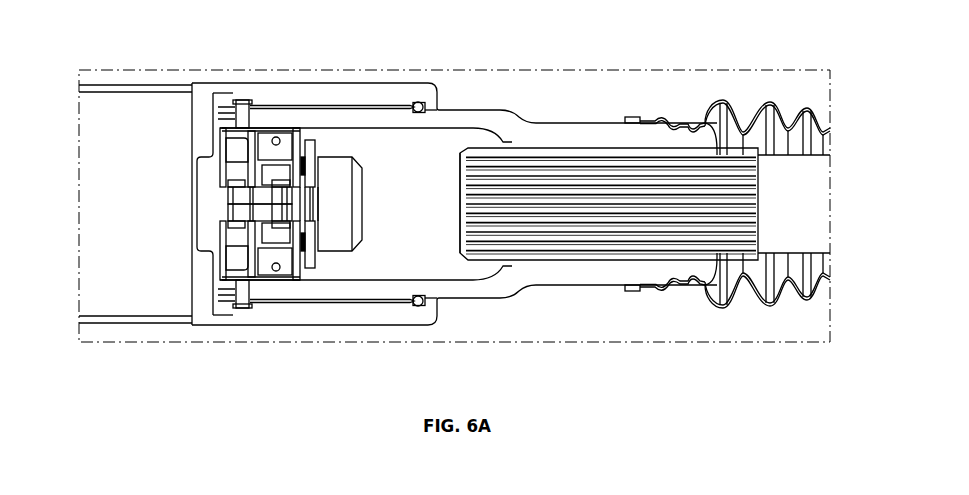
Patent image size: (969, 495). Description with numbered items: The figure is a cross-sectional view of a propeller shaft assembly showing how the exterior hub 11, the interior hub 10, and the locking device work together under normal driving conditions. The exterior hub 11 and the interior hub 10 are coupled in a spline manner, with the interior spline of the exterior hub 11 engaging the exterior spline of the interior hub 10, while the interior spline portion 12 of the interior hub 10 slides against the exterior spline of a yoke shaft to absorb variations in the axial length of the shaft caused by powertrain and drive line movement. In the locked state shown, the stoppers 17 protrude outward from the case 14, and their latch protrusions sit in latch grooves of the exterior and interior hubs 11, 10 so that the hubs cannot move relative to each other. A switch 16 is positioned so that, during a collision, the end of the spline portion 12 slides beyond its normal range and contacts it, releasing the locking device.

The interior hub 10 is at (518, 130).
The exterior hub 11 is at (337, 96).
The interior spline portion 12 is at (602, 170).
The case 14 is at (203, 163).
The switch 16 is at (332, 243).
The stoppers 17 is at (239, 90).